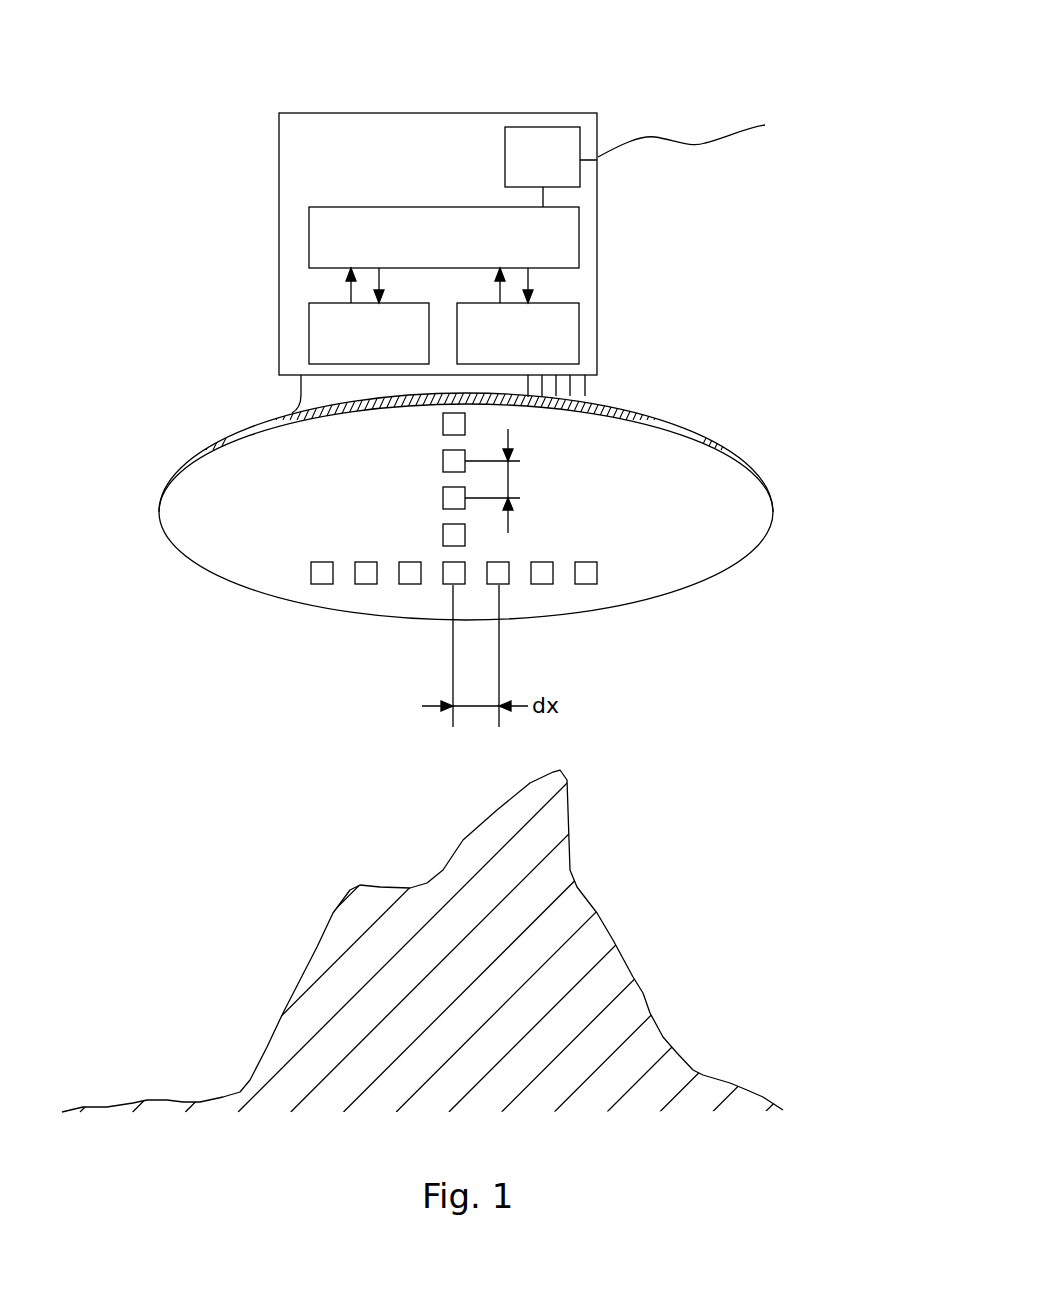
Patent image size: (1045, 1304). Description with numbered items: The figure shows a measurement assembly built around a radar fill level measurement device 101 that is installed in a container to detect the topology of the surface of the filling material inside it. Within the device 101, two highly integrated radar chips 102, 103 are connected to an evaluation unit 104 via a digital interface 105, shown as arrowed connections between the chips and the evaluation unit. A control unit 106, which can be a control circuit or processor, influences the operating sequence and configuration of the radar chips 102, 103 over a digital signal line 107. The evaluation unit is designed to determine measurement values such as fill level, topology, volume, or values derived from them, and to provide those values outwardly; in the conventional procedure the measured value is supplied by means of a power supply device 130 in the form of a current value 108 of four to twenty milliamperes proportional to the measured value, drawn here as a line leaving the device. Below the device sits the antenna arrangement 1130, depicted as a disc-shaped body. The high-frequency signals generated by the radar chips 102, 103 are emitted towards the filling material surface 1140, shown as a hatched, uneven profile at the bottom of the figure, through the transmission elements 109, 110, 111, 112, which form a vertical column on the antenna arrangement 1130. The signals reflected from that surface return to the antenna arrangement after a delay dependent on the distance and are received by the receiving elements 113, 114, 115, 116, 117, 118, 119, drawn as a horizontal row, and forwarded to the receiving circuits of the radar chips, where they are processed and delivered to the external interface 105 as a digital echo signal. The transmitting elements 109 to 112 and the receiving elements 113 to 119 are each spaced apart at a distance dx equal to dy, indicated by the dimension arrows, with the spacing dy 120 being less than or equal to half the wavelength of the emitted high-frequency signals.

The radar fill level measurement device 101 is at (492, 110).
The radar chip 102 is at (579, 333).
The radar chip 103 is at (309, 332).
The evaluation unit 104 is at (309, 225).
The digital interface 105 is at (351, 282).
The control unit 106 is at (579, 230).
The digital signal line 107 is at (528, 272).
The 4-20 mA current value 108 is at (722, 140).
The transmission element 109 is at (443, 420).
The transmission element 110 is at (443, 457).
The transmission element 111 is at (443, 494).
The transmission element 112 is at (443, 531).
The receiving element 113 is at (324, 585).
The receiving element 114 is at (368, 585).
The receiving element 115 is at (412, 585).
The receiving element 116 is at (447, 585).
The receiving element 117 is at (505, 585).
The receiving element 118 is at (540, 585).
The receiving element 119 is at (585, 585).
The distance dy 120 is at (555, 482).
The power supply device 130 is at (580, 173).
The antenna arrangement 1130 is at (723, 442).
The filling material surface 1140 is at (612, 935).